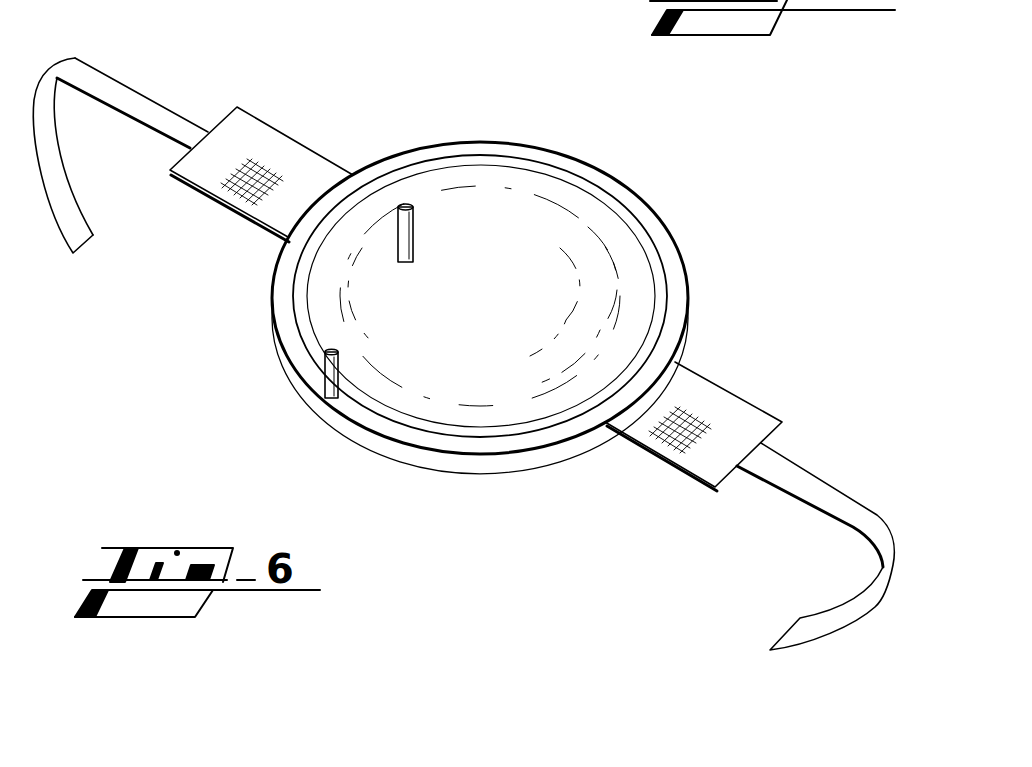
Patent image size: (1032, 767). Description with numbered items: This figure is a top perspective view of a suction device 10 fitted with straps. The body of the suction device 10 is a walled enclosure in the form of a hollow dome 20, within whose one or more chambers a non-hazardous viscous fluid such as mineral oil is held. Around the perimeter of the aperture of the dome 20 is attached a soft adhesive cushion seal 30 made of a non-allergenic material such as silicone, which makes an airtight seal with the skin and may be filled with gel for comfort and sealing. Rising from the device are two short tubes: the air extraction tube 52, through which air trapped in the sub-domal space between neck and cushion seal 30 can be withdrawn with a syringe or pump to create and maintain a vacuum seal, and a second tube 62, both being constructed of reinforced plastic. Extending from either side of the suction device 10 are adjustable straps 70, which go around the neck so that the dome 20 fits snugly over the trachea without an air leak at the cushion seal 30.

The suction device 10 is at (497, 50).
The dome 20 is at (543, 212).
The cushion seal 30 is at (450, 462).
The air extraction tube 52 is at (330, 347).
The tube 62 is at (415, 222).
The adjustable straps 70 is at (642, 447).